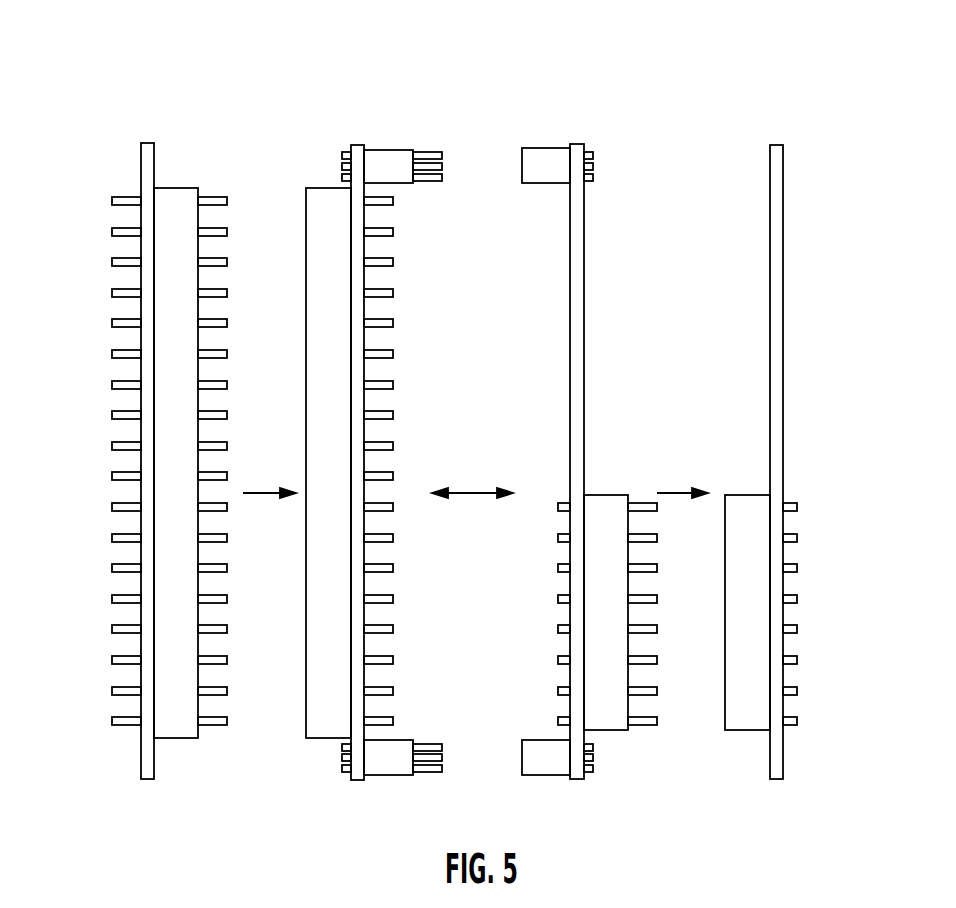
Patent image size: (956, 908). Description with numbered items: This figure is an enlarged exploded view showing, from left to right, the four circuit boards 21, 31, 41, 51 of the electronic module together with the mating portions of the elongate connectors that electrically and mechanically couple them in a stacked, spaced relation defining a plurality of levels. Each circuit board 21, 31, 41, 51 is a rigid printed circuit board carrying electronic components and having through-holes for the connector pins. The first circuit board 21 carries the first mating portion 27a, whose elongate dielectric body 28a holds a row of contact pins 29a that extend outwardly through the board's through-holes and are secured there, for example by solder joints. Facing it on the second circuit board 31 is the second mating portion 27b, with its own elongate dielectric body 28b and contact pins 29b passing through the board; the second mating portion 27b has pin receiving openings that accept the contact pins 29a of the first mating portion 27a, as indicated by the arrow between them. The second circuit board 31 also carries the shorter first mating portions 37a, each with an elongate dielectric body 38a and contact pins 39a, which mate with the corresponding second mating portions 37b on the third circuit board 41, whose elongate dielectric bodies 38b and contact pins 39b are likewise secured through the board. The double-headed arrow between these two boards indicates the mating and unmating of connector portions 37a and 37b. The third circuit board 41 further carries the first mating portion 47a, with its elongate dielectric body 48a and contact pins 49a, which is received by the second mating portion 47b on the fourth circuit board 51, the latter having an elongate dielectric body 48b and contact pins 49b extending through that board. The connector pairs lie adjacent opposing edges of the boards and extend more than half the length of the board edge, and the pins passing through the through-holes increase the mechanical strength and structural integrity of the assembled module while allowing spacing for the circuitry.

The circuit board 21 is at (149, 143).
The first mating portion 27a is at (144, 389).
The elongate dielectric body 28a is at (173, 213).
The contact pins 29a is at (112, 445).
The second mating portion 27b is at (347, 413).
The elongate dielectric body 28b is at (320, 218).
The contact pins 29b is at (393, 690).
The circuit board 31 is at (357, 780).
The first mating portion 37a is at (358, 451).
The elongate dielectric body 38a is at (382, 160).
The contact pins 39a is at (342, 756).
The circuit board 41 is at (577, 144).
The second mating portion 37b is at (559, 467).
The elongate dielectric body 38b is at (545, 170).
The contact pins 39b is at (591, 155).
The first mating portion 47a is at (606, 636).
The elongate dielectric body 48a is at (613, 699).
The contact pins 49a is at (558, 660).
The second mating portion 47b is at (779, 619).
The elongate dielectric body 48b is at (747, 510).
The contact pins 49b is at (797, 505).
The circuit board 51 is at (778, 781).